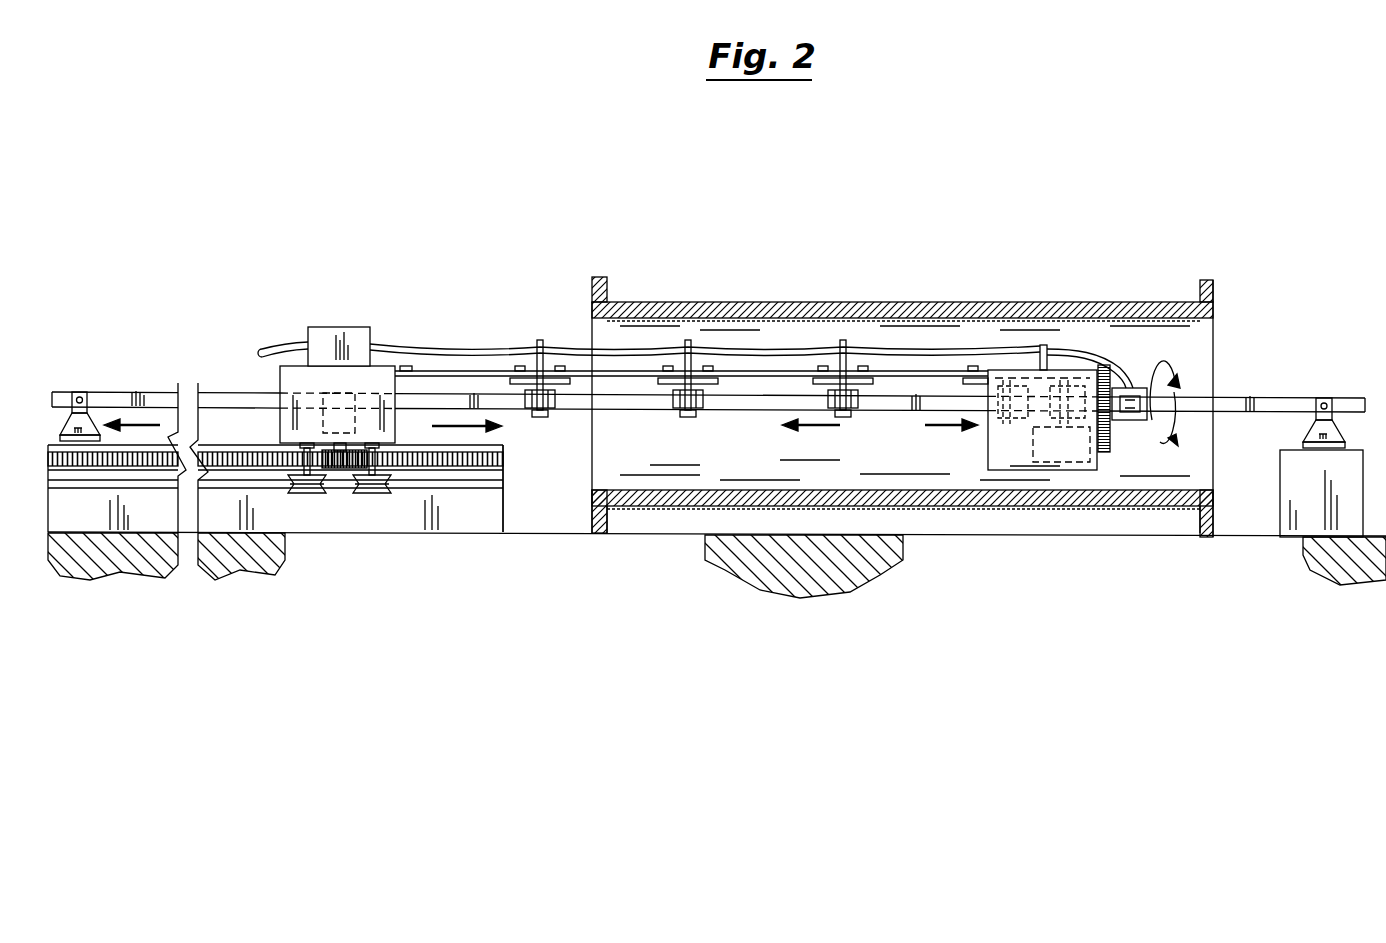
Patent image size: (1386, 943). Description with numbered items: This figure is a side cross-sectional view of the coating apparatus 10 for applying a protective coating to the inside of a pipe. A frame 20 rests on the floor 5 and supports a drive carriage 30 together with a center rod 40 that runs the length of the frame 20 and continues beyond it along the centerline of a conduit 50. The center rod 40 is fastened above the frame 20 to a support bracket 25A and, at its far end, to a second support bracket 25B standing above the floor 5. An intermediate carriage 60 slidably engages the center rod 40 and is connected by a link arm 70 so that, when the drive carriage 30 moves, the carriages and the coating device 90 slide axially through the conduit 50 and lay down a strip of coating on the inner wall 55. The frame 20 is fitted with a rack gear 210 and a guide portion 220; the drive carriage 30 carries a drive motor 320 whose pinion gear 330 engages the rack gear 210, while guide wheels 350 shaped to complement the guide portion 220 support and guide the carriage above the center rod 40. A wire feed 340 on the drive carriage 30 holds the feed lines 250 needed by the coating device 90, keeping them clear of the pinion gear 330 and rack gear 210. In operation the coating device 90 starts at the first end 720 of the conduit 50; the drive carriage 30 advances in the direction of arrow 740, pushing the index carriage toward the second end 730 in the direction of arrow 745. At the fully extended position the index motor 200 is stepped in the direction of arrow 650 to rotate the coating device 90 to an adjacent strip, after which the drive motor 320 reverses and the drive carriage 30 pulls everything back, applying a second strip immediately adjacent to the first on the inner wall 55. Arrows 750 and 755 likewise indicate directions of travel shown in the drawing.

The floor 5 is at (810, 577).
The apparatus 10 is at (386, 249).
The frame 20 is at (113, 524).
The support bracket 25A is at (104, 392).
The second support bracket 25B is at (1312, 430).
The drive carriage 30 is at (292, 378).
The center rod 40 is at (600, 403).
The conduit 50 is at (838, 302).
The inner wall 55 is at (778, 468).
The intermediate carriage 60 is at (708, 388).
The link arm 70 is at (933, 372).
The coating device 90 is at (1138, 388).
The index motor 200 is at (1060, 446).
The rack gear 210 is at (505, 458).
The guide portion 220 is at (470, 489).
The feed lines 250 is at (540, 341).
The drive motor 320 is at (345, 415).
The pinion gear 330 is at (343, 456).
The wire feed 340 is at (357, 338).
The guide wheels 350 is at (373, 492).
The arrow 650 is at (1153, 424).
The first end 720 is at (600, 277).
The second end 730 is at (1206, 280).
The arrow 740 is at (470, 430).
The arrow 745 is at (950, 426).
The direction arrow 750 is at (147, 423).
The direction arrow 755 is at (810, 426).